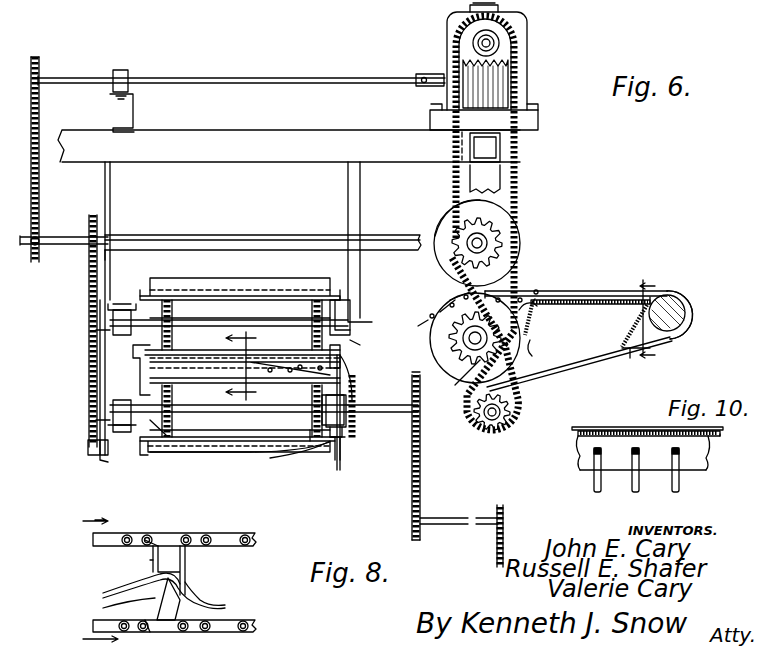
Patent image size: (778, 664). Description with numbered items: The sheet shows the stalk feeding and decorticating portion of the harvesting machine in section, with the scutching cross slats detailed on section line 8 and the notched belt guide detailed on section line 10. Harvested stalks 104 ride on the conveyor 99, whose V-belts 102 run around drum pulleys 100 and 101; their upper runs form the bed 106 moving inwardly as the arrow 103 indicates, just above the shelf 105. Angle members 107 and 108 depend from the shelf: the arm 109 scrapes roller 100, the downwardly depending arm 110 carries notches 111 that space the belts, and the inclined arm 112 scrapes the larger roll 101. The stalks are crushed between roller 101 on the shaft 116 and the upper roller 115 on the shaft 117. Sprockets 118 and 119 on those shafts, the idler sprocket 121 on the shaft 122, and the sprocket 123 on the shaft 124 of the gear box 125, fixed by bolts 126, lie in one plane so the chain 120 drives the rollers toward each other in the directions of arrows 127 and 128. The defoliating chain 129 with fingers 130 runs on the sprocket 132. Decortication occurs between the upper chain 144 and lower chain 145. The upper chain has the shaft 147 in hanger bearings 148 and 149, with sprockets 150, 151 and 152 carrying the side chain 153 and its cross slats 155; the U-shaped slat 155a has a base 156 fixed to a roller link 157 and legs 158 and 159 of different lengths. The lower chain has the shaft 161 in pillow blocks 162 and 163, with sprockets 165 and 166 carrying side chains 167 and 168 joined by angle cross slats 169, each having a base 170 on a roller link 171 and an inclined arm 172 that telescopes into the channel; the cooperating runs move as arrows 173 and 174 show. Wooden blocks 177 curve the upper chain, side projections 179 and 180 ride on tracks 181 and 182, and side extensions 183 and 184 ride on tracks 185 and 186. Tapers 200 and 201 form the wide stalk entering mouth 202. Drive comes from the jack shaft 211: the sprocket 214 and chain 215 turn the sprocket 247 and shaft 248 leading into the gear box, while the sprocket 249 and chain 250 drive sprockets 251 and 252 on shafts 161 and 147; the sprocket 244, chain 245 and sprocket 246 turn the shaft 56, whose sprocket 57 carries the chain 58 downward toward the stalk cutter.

In FIG. 6, the section line 8— 8 is at (250, 364).
In FIG. 6, the section line 10— 10 is at (660, 320).
In FIG. 6, the shaft 56 is at (465, 513).
In FIG. 6, the second sprocket 57 is at (500, 507).
In FIG. 6, the chain 58 is at (497, 544).
In FIG. 6, the conveyor 99 is at (672, 290).
In FIG. 6, the drum pulley 100 is at (686, 330).
In FIG. 6, the drum pulley 101 is at (460, 391).
In FIG. 6, the V-belts 102 is at (580, 370).
In FIG. 10, the V-belts 102 is at (594, 485).
In FIG. 6, the arrow 103 is at (585, 283).
In FIG. 6, the stalks 104 is at (430, 309).
In FIG. 8, the stalks 104 is at (103, 594).
In FIG. 6, the shelf or table part 105 is at (568, 308).
In FIG. 10, the shelf or table part 105 is at (640, 427).
In FIG. 6, the upper movable bed 106 is at (600, 290).
In FIG. 6, the angle member 107 is at (622, 338).
In FIG. 10, the angle member 107 is at (575, 461).
In FIG. 6, the angle member 108 is at (530, 328).
In FIG. 6, the arm 109 is at (645, 292).
In FIG. 10, the arm 109 is at (708, 439).
In FIG. 10, the downwardly depending arm 110 is at (710, 448).
In FIG. 6, the notches 111 is at (620, 355).
In FIG. 10, the notches 111 is at (590, 470).
In FIG. 6, the laterally inclined leg or arm 112 is at (539, 354).
In FIG. 6, the upper roller 115 is at (445, 217).
In FIG. 6, the shaft 116 is at (468, 349).
In FIG. 6, the shaft 117 is at (500, 239).
In FIG. 6, the sprocket 118 is at (462, 337).
In FIG. 6, the sprocket 119 is at (437, 257).
In FIG. 6, the chain 120 is at (522, 182).
In FIG. 6, the idler sprocket 121 is at (480, 428).
In FIG. 6, the shaft 122 is at (491, 420).
In FIG. 6, the sprocket 123 is at (498, 30).
In FIG. 6, the shaft 124 is at (490, 43).
In FIG. 6, the gear box 125 is at (447, 34).
In FIG. 6, the bolts 126 is at (430, 105).
In FIG. 6, the arrow 127 is at (505, 290).
In FIG. 6, the arrow 128 is at (522, 315).
In FIG. 6, the defoliating chain member 129 is at (352, 436).
In FIG. 6, the fingers 130 is at (343, 379).
In FIG. 6, the sprocket 132 is at (358, 407).
In FIG. 6, the upper chain 144 is at (215, 300).
In FIG. 6, the lower chain 145 is at (206, 434).
In FIG. 6, the shaft 147 is at (240, 318).
In FIG. 6, the hanger bearing 148 is at (113, 332).
In FIG. 6, the hanger bearing 149 is at (370, 321).
In FIG. 6, the sprockets 150 is at (310, 351).
In FIG. 6, the sprocket 151 is at (312, 300).
In FIG. 6, the sprocket 152 is at (170, 300).
In FIG. 6, the side chain member 153 is at (168, 352).
In FIG. 8, the side chain member 153 is at (240, 527).
In FIG. 6, the cross slats 155 is at (195, 278).
In FIG. 8, the U-shaped slat 155a is at (194, 565).
In FIG. 8, the base 156 is at (157, 548).
In FIG. 8, the roller chain link 157 is at (178, 536).
In FIG. 8, the leg 158 is at (152, 559).
In FIG. 8, the leg 159 is at (186, 582).
In FIG. 6, the shaft 161 is at (248, 414).
In FIG. 6, the pillow block bearing 162 is at (113, 402).
In FIG. 6, the pillow block bearing 163 is at (346, 411).
In FIG. 6, the sprocket 165 is at (322, 417).
In FIG. 6, the sprocket 166 is at (172, 389).
In FIG. 6, the side chain 167 is at (163, 429).
In FIG. 8, the side chain 167 is at (255, 621).
In FIG. 6, the side chain 168 is at (312, 441).
In FIG. 6, the cross slats 169 is at (238, 452).
In FIG. 8, the cross slats 169 is at (150, 604).
In FIG. 8, the base 170 is at (178, 633).
In FIG. 8, the roller link 171 is at (150, 633).
In FIG. 8, the inclined leg or arm 172 is at (172, 599).
In FIG. 8, the arrow 173 is at (108, 527).
In FIG. 8, the arrow 174 is at (110, 639).
In FIG. 6, the wooden blocks 177 is at (172, 304).
In FIG. 6, the side projection 179 is at (148, 291).
In FIG. 6, the side projection 180 is at (340, 300).
In FIG. 6, the track 181 is at (140, 367).
In FIG. 6, the track 182 is at (350, 341).
In FIG. 6, the side extension 183 is at (143, 455).
In FIG. 6, the side extension 184 is at (336, 462).
In FIG. 6, the track 185 is at (113, 392).
In FIG. 6, the track 186 is at (348, 369).
In FIG. 6, the taper 200 is at (255, 292).
In FIG. 6, the taper 201 is at (282, 459).
In FIG. 6, the wide opening 202 is at (312, 391).
In FIG. 6, the jack shaft 211 is at (63, 245).
In FIG. 6, the sprocket 214 is at (35, 262).
In FIG. 6, the chain 215 is at (41, 104).
In FIG. 6, the sprocket 244 is at (422, 436).
In FIG. 6, the chain 245 is at (421, 477).
In FIG. 6, the sprocket 246 is at (412, 495).
In FIG. 6, the sprocket 247 is at (37, 57).
In FIG. 6, the shaft 248 is at (260, 77).
In FIG. 6, the second sprocket 249 is at (92, 221).
In FIG. 6, the chain 250 is at (90, 287).
In FIG. 6, the sprocket 251 is at (95, 446).
In FIG. 6, the sprocket 252 is at (92, 307).